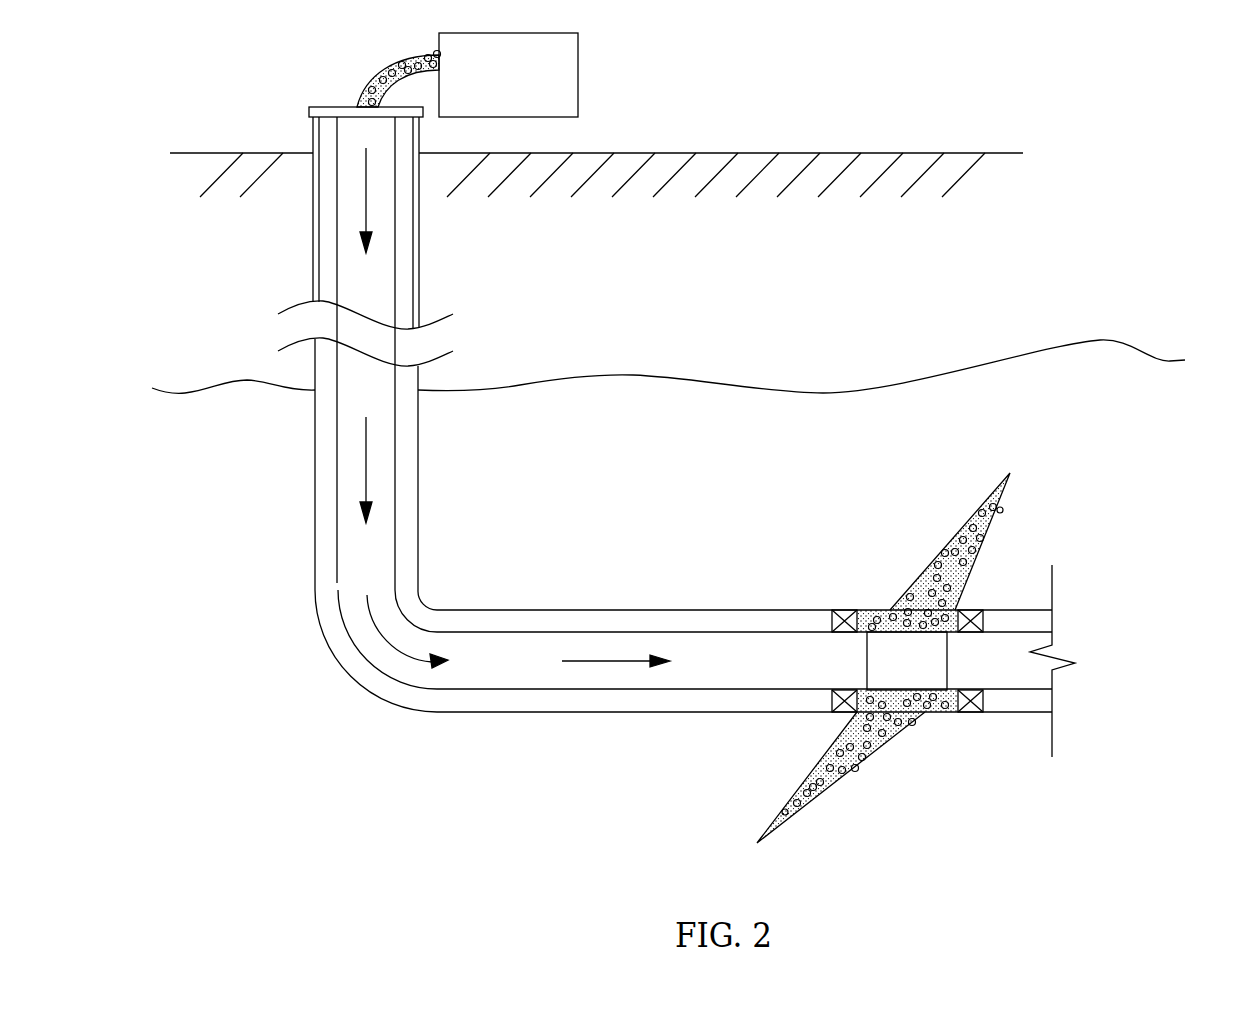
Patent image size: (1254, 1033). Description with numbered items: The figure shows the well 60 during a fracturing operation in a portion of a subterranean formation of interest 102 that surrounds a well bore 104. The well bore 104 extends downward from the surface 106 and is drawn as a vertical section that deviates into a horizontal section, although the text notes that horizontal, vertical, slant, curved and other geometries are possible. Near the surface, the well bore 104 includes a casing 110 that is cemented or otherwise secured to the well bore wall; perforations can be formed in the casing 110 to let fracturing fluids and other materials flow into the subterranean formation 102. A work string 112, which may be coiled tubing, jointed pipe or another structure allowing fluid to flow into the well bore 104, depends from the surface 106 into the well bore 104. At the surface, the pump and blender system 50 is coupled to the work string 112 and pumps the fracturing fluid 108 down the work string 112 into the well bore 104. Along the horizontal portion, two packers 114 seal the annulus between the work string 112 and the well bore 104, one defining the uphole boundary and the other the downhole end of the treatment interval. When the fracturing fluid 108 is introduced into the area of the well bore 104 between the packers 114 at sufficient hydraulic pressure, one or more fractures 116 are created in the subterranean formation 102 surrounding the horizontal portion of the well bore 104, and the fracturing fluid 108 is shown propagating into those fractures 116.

The pump and blender system 50 is at (535, 87).
The well 60 is at (323, 705).
The subterranean formation 102 is at (707, 427).
The well bore 104 is at (328, 250).
The surface 106 is at (800, 153).
The fracturing fluid 108 is at (378, 75).
The casing 110 is at (318, 290).
The work string 112 is at (338, 515).
The packers 114 is at (845, 609).
The fractures 116 is at (928, 540).